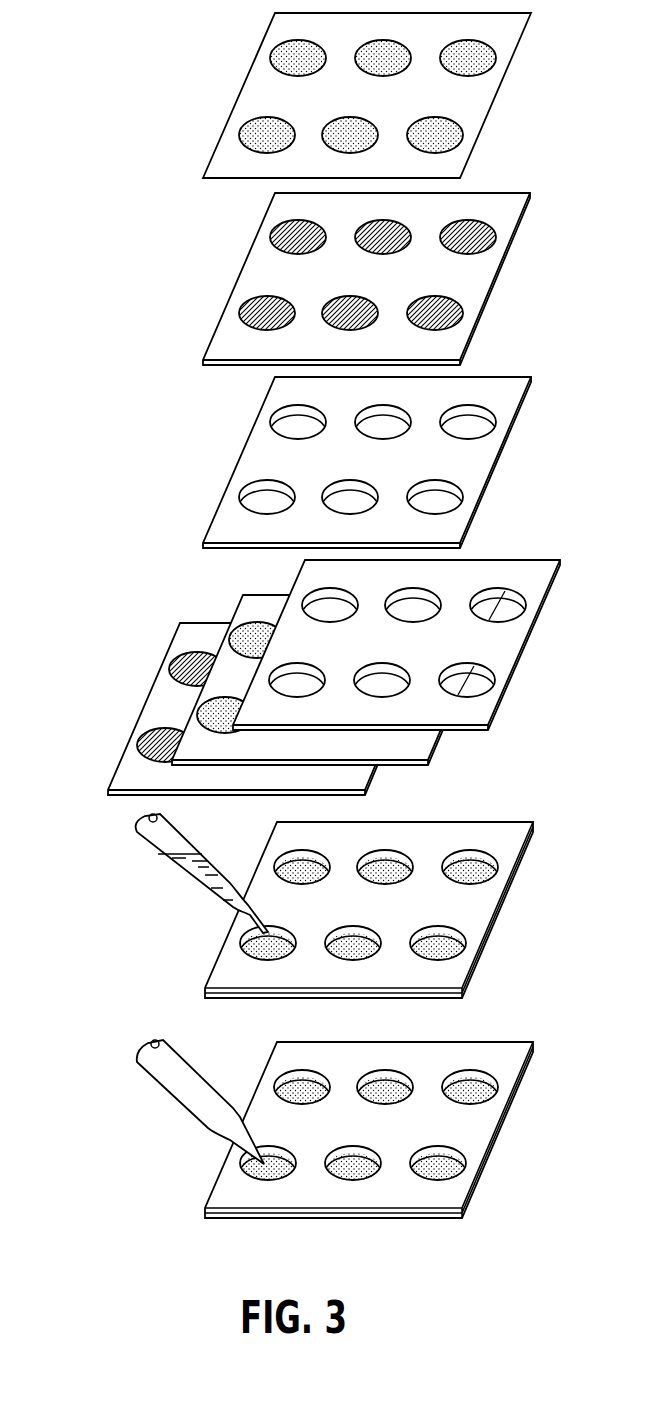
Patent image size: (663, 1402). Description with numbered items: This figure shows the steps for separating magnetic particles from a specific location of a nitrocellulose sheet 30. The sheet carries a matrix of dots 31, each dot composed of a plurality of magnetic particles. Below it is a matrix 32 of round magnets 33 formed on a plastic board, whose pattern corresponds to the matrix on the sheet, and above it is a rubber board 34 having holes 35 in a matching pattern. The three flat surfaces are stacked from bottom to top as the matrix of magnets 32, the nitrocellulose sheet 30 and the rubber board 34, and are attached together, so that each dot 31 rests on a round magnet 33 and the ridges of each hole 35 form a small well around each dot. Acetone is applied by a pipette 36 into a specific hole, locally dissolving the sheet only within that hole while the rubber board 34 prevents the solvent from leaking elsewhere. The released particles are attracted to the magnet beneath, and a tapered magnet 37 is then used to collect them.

The nitrocellulose sheet 30 is at (256, 50).
The dots 31 is at (250, 118).
The matrix of round magnets 32 is at (253, 237).
The round magnets 33 is at (243, 305).
The rubber board 34 is at (247, 422).
The holes 35 is at (267, 497).
The pipette 36 is at (175, 878).
The tapered magnet 37 is at (163, 1092).